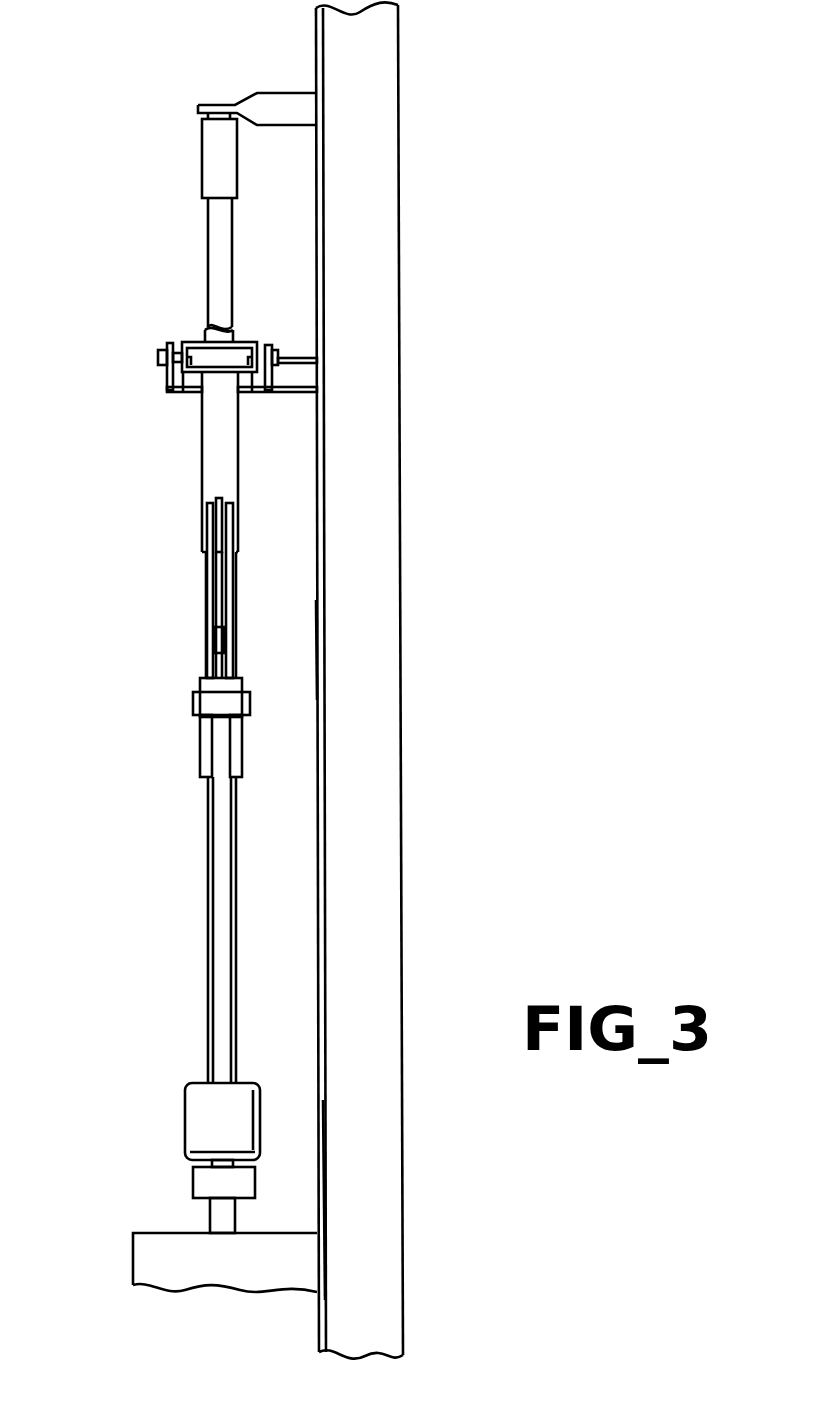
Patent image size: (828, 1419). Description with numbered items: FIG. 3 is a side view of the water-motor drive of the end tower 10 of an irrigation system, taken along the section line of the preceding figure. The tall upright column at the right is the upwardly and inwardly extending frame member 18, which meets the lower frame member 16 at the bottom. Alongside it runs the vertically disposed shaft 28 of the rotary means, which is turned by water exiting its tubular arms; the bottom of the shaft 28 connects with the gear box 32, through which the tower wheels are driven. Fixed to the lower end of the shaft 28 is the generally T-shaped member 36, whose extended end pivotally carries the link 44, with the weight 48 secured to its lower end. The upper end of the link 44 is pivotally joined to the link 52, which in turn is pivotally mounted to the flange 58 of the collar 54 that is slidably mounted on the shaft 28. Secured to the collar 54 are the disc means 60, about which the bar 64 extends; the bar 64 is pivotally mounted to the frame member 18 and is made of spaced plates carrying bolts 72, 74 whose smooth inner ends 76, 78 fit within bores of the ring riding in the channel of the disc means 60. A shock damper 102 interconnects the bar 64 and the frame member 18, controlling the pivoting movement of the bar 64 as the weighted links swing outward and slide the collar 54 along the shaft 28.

The tower 10 is at (473, 845).
The lower frame member 16 is at (372, 1255).
The frame member 18 is at (368, 653).
The shaft 28 is at (207, 907).
The gear box 32 is at (143, 1253).
The T-shaped member 36 is at (200, 748).
The link 44 is at (212, 955).
The weight 48 is at (203, 1118).
The link 52 is at (208, 595).
The collar 54 is at (202, 455).
The flange 58 is at (212, 500).
The disc means 60 is at (243, 342).
The bar 64 is at (167, 345).
The bolt 72 is at (158, 360).
The bolt 74 is at (275, 350).
The inner end 76 is at (190, 375).
The inner end 78 is at (250, 372).
The shock damper 102 is at (202, 150).